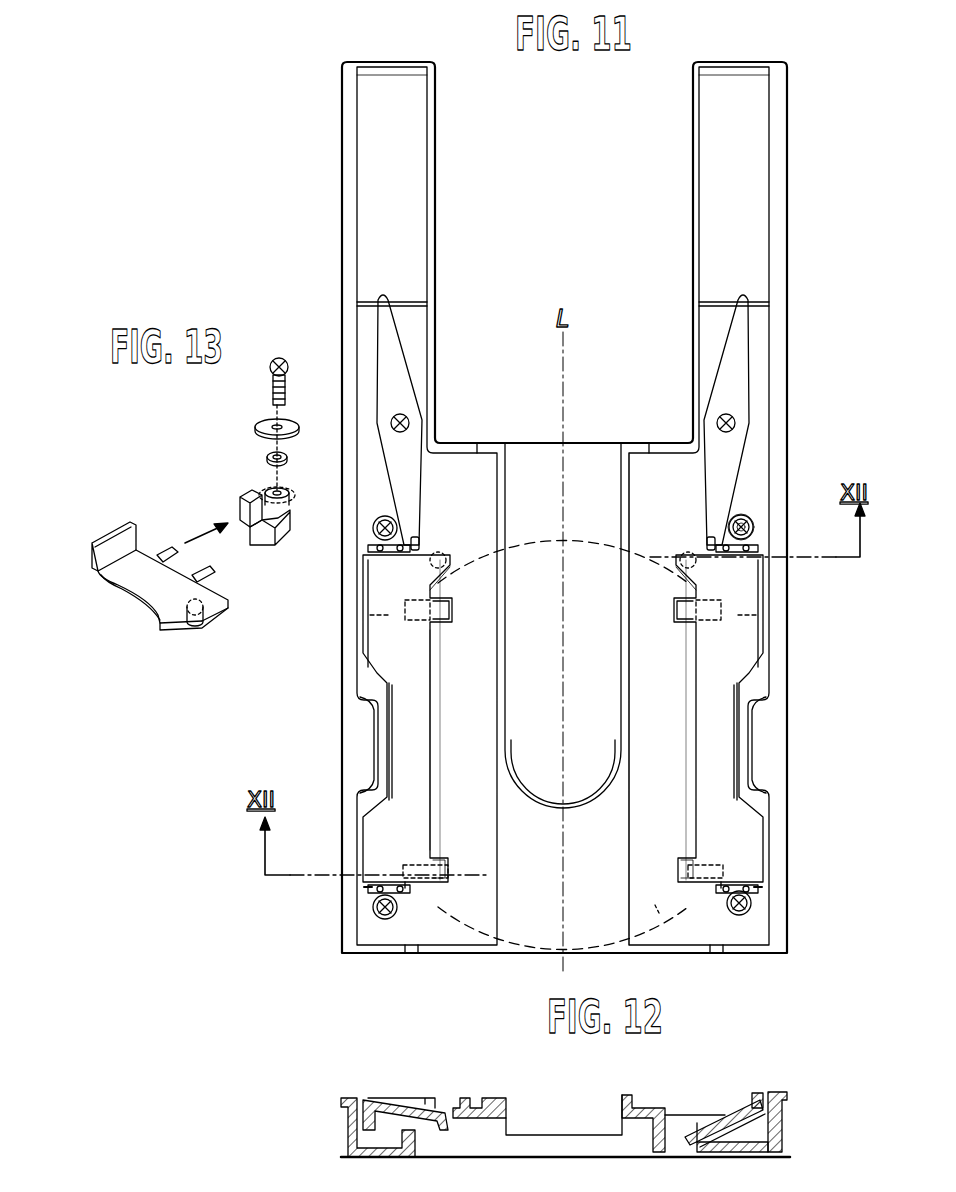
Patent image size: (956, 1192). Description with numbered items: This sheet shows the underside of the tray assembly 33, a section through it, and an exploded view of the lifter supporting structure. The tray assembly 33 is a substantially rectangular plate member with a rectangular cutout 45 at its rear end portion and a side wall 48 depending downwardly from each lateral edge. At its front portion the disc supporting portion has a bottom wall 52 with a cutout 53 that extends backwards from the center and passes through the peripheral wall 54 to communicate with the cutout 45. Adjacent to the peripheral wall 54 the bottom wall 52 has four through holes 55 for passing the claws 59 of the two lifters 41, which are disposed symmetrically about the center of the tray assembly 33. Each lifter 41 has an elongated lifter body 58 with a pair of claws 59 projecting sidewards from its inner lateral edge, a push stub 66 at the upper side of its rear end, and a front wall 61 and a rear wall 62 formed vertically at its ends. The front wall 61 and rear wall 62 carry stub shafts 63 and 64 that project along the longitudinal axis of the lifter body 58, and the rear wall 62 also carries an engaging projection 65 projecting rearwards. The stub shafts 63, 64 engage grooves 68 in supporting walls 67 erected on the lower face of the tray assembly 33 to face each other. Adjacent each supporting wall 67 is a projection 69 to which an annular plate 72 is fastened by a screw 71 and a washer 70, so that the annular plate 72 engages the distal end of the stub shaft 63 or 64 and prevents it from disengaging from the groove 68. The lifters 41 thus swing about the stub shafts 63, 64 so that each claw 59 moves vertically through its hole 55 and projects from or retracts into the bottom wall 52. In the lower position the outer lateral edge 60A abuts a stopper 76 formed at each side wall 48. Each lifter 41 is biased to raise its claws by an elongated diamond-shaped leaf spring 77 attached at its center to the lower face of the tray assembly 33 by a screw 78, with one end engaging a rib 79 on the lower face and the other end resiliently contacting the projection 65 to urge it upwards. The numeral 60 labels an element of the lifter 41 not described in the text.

In FIG. 11, the tray assembly 33 is at (788, 315).
In FIG. 12, the tray assembly 33 is at (545, 1133).
In FIG. 11, the side wall 48 is at (342, 193).
In FIG. 11, the rib 79 is at (405, 300).
In FIG. 11, the rectangular cutout 45 is at (437, 333).
In FIG. 11, the leaf spring 77 is at (378, 332).
In FIG. 11, the screw 78 is at (408, 420).
In FIG. 11, the cutout 53 is at (563, 625).
In FIG. 11, the bottom wall 52 is at (660, 699).
In FIG. 11, the lifter 41 is at (433, 790).
In FIG. 12, the lifter 41 is at (390, 1094).
In FIG. 11, the lifter body 58 is at (432, 690).
In FIG. 11, the guide wall 60 is at (432, 724).
In FIG. 11, the outer lateral edge 60A is at (382, 724).
In FIG. 11, the stopper 76 is at (389, 757).
In FIG. 11, the push stub 66 is at (448, 552).
In FIG. 11, the claw 59 is at (432, 590).
In FIG. 11, the through hole 55 is at (440, 620).
In FIG. 11, the supporting wall 67 is at (382, 518).
In FIG. 13, the supporting wall 67 is at (250, 490).
In FIG. 11, the engaging projection 65 is at (416, 538).
In FIG. 13, the engaging projection 65 is at (215, 572).
In FIG. 11, the rear wall 62 is at (438, 553).
In FIG. 13, the rear wall 62 is at (135, 560).
In FIG. 11, the stub shaft 64 is at (368, 549).
In FIG. 13, the stub shaft 64 is at (168, 543).
In FIG. 11, the groove 68 is at (804, 826).
In FIG. 13, the groove 68 is at (260, 540).
In FIG. 11, the stub shaft 63 is at (368, 892).
In FIG. 11, the front wall 61 is at (406, 888).
In FIG. 11, the peripheral wall 54 is at (655, 902).
In FIG. 11, the annular plate 72 is at (748, 516).
In FIG. 13, the annular plate 72 is at (262, 423).
In FIG. 11, the screw 71 is at (750, 523).
In FIG. 13, the screw 71 is at (287, 388).
In FIG. 13, the washer 70 is at (290, 455).
In FIG. 13, the projection 69 is at (290, 516).